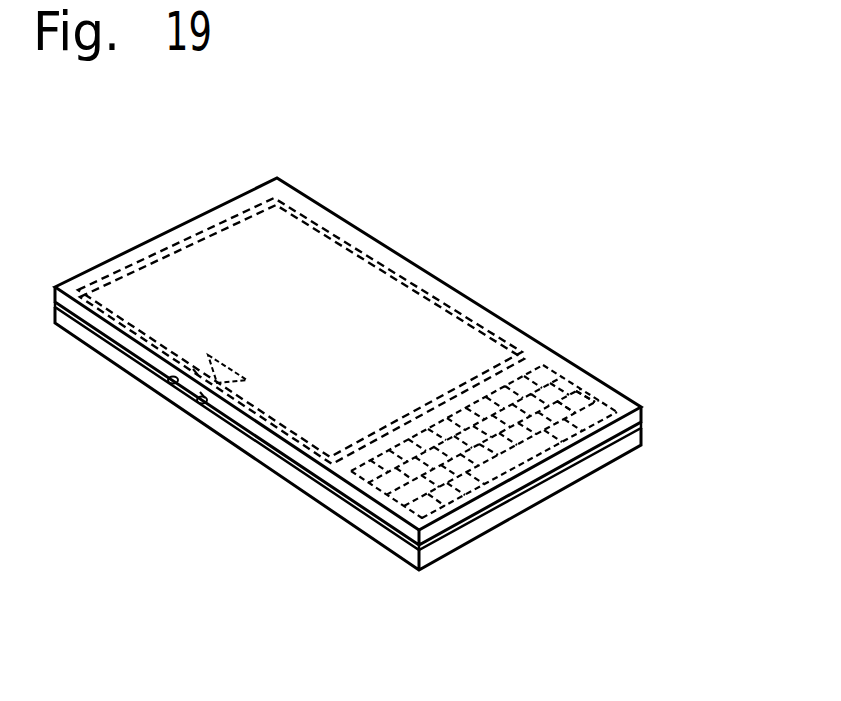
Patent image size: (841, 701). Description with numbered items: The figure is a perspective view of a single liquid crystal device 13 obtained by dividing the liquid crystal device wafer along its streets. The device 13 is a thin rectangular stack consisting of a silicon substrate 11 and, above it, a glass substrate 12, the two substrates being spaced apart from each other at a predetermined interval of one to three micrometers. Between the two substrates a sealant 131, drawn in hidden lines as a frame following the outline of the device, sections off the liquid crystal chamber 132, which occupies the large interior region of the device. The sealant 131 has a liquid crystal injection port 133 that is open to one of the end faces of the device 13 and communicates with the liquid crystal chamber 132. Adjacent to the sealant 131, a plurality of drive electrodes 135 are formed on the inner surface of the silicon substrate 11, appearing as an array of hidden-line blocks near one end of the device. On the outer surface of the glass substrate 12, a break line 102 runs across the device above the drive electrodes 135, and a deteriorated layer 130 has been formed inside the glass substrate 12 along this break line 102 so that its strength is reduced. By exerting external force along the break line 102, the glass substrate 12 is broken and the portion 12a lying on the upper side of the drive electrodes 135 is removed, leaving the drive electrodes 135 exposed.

The break line 102 is at (407, 352).
The silicon substrate 11 is at (258, 462).
The glass substrate 12 is at (470, 310).
The portion of glass substrate 12a is at (613, 407).
The liquid crystal device 13 is at (419, 236).
The deteriorated layer 130 is at (538, 358).
The sealant 131 is at (333, 243).
The liquid crystal chamber 132 is at (228, 250).
The liquid crystal injection port 133 is at (182, 403).
The drive electrodes 135 is at (600, 392).